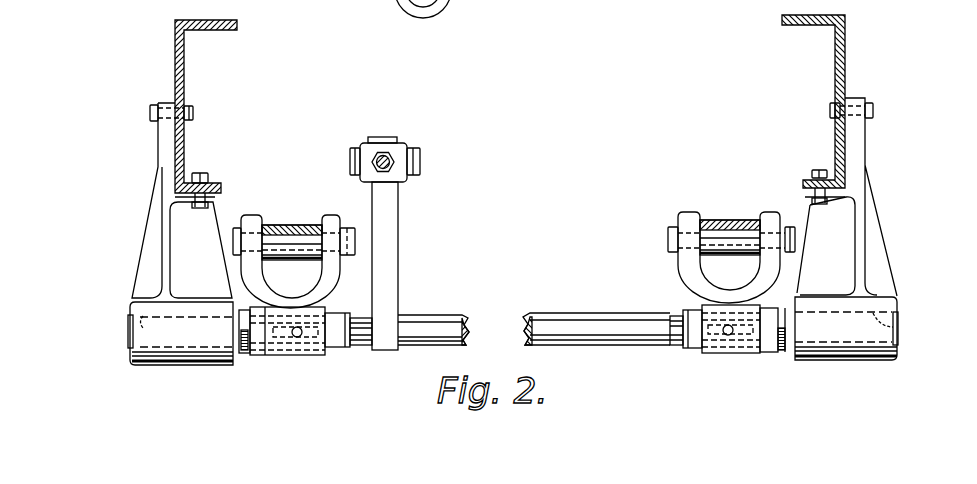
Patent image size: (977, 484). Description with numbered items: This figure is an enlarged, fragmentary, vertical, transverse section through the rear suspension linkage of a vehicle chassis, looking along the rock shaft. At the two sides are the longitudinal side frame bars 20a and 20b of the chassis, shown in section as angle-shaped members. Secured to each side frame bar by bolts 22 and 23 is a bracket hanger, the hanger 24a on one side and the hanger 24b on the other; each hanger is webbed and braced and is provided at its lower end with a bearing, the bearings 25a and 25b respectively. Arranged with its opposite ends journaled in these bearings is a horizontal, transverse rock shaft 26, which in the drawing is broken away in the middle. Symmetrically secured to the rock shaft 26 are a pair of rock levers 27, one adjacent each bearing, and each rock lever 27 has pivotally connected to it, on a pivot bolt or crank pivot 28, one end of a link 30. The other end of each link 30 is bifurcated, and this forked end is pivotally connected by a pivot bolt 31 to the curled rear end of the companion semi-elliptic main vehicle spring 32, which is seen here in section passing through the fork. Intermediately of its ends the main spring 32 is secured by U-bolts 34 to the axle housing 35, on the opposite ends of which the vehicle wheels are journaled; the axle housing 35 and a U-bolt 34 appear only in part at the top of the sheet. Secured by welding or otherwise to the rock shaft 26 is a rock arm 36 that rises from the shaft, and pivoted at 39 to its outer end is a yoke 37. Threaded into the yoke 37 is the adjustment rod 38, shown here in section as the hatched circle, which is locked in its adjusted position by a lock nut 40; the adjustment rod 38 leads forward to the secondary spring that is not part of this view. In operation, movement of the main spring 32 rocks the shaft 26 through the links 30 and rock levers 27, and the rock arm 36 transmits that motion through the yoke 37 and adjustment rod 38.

The longitudinal side frame bar 20a is at (176, 59).
The longitudinal side frame bar 20b is at (846, 50).
The bolt 22 is at (150, 113).
The bolt 23 is at (210, 176).
The bracket hanger 24a is at (143, 262).
The bracket hanger 24b is at (873, 228).
The bearing 25a is at (140, 326).
The bearing 25b is at (898, 322).
The rock shaft 26 is at (533, 314).
The rock lever 27 is at (331, 349).
The pivot bolt 28 is at (347, 340).
The link 30 is at (256, 215).
The pivot bolt 31 is at (235, 226).
The main vehicle spring 32 is at (289, 240).
The U-bolt 34 is at (456, 0).
The axle housing 35 is at (380, 0).
The rock arm 36 is at (399, 242).
The yoke 37 is at (400, 150).
The adjustment rod 38 is at (362, 152).
The pivot 39 is at (421, 161).
The lock nut 40 is at (392, 168).